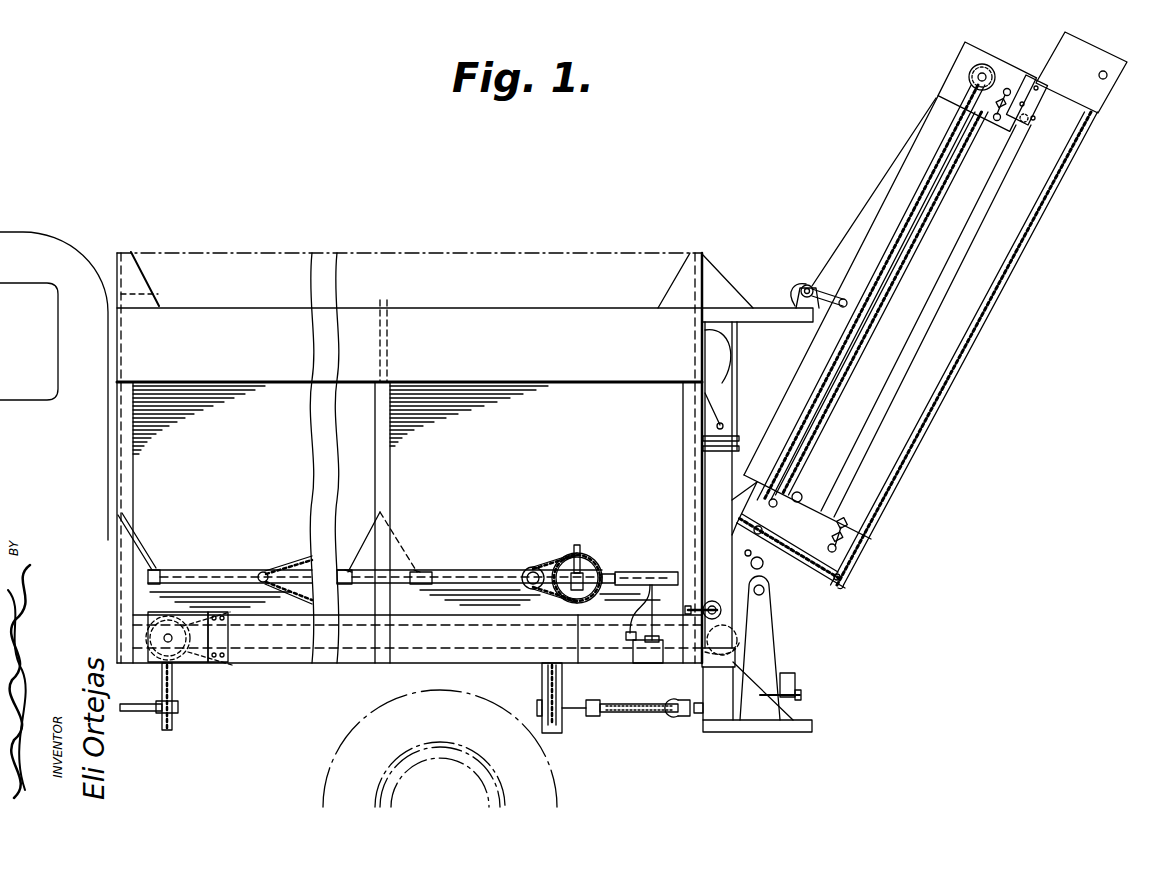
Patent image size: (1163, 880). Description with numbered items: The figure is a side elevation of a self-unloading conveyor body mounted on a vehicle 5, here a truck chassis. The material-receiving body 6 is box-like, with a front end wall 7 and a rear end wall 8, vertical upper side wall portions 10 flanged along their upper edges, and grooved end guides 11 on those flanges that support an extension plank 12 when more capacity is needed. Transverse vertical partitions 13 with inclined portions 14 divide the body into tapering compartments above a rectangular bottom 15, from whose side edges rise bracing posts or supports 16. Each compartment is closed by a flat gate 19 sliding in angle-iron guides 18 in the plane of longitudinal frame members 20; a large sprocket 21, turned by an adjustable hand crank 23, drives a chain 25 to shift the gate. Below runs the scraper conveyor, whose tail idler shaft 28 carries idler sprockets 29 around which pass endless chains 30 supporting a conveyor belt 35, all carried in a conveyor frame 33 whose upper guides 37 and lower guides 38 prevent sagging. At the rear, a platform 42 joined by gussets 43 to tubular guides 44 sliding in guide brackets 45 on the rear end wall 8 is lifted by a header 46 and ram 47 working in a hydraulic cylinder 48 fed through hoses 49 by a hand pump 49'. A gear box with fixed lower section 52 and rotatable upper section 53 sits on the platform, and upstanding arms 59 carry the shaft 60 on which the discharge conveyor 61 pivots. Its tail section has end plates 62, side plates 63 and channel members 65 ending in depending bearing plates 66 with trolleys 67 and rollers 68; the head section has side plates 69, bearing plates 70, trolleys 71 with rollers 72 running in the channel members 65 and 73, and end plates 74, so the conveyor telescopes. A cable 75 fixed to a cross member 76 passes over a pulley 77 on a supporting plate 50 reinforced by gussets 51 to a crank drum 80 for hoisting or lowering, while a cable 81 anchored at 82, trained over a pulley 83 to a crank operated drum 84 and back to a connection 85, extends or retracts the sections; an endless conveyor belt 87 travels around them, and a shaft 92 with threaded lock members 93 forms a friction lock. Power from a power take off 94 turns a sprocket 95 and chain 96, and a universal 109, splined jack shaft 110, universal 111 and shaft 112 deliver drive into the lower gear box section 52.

The vehicle 5 is at (88, 252).
The material-receiving body 6 is at (232, 300).
The front end wall 7 is at (145, 296).
The rear end wall 8 is at (695, 335).
The side wall top rail 10 is at (503, 308).
The grooved end guides 11 is at (158, 283).
The extension plank 12 is at (560, 253).
The vertical partitions 13 is at (395, 353).
The inclined portions 14 is at (358, 545).
The rectangular bottom 15 is at (483, 664).
The posts or supports 16 is at (134, 505).
The parallel guides 18 is at (418, 584).
The gate 19 is at (442, 572).
The frame members 20 is at (640, 572).
The large sprocket 21 is at (566, 558).
The hand crank 23 is at (580, 546).
The chain 25 is at (536, 567).
The idler shaft 28 is at (171, 645).
The idler sprockets 29 is at (207, 638).
The endless chains 30 is at (735, 630).
The scraper conveyor frame 33 is at (180, 612).
The conveyor belt 35 is at (290, 664).
The upper guides 37 is at (250, 615).
The lower guides 38 is at (355, 664).
The platform 42 is at (770, 732).
The gussets 43 is at (797, 708).
The tubular guides 44 is at (703, 690).
The guide brackets 45 is at (724, 540).
The header 46 is at (721, 447).
The ram 47 is at (703, 438).
The hydraulic cylinder 48 is at (735, 380).
The hoses 49 is at (717, 379).
The hand pump 49' is at (644, 638).
The supporting plate 50 is at (750, 308).
The gussets 51 is at (728, 276).
The lower gear box section 52 is at (800, 697).
The upper gear box section 53 is at (797, 680).
The upstanding arms 59 is at (778, 640).
The shaft 60 is at (761, 600).
The discharge conveyor 61 is at (872, 210).
The end plates 62 is at (780, 578).
The side plates 63 is at (808, 363).
The channel member 65 is at (800, 428).
The depending bearing plates 66 is at (1015, 60).
The trolleys 67 is at (1044, 113).
The rollers 68 is at (1030, 124).
The side plates 69 is at (920, 425).
The bearing plates 70 is at (856, 540).
The trolleys 71 is at (760, 520).
The rollers 72 is at (772, 497).
The channel members 73 is at (927, 347).
The end plates 74 is at (1110, 96).
The cable 75 is at (793, 300).
The cross member 76 is at (840, 296).
The pulley 77 is at (806, 284).
The drum 80 is at (716, 600).
The cable 81 is at (828, 436).
The connection 82 is at (800, 492).
The pulley 83 is at (969, 66).
The crank operated drum 84 is at (770, 558).
The connection 85 is at (764, 552).
The endless conveyor belt 87 is at (905, 490).
The shaft 92 is at (1010, 92).
The threaded lock members 93 is at (997, 124).
The power take off 94 is at (140, 712).
The sprocket 95 is at (179, 707).
The chain 96 is at (162, 686).
The universal connection 109 is at (582, 717).
The jack shaft 110 is at (640, 713).
The universal 111 is at (683, 716).
The shaft 112 is at (700, 714).